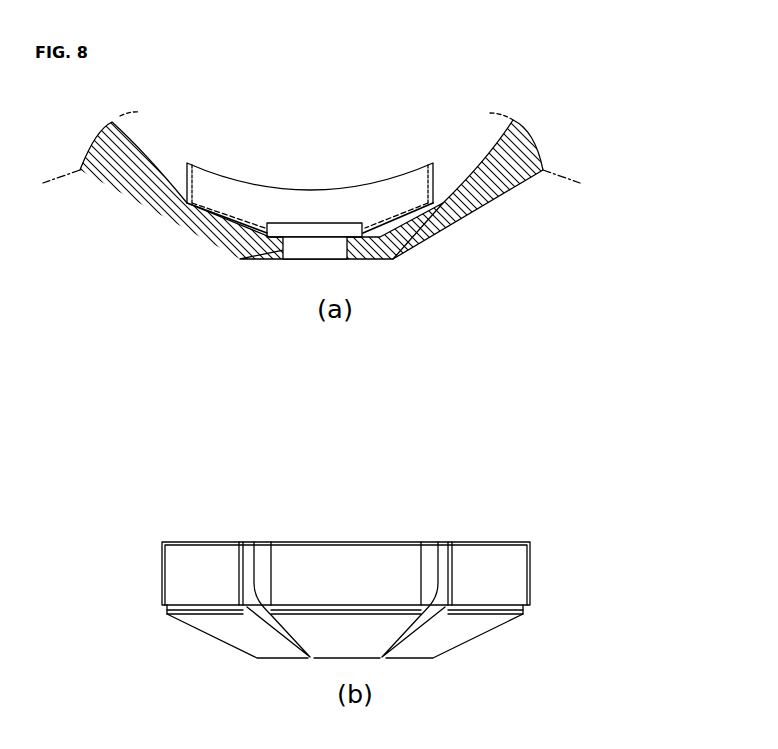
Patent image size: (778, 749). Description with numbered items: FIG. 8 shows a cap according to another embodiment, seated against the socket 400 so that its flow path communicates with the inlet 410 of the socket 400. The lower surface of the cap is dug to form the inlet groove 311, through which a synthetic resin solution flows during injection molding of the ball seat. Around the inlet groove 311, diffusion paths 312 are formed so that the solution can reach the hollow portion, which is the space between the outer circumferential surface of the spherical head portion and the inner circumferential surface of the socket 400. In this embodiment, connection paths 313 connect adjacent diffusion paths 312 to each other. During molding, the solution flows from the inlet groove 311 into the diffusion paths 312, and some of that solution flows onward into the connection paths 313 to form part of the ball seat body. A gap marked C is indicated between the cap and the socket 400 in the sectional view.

The inlet groove 311 is at (310, 228).
The diffusion paths 312 is at (413, 247).
The connection paths 313 is at (188, 612).
The socket 400 is at (523, 187).
The inlet 410 is at (300, 253).
The gap C is at (462, 220).